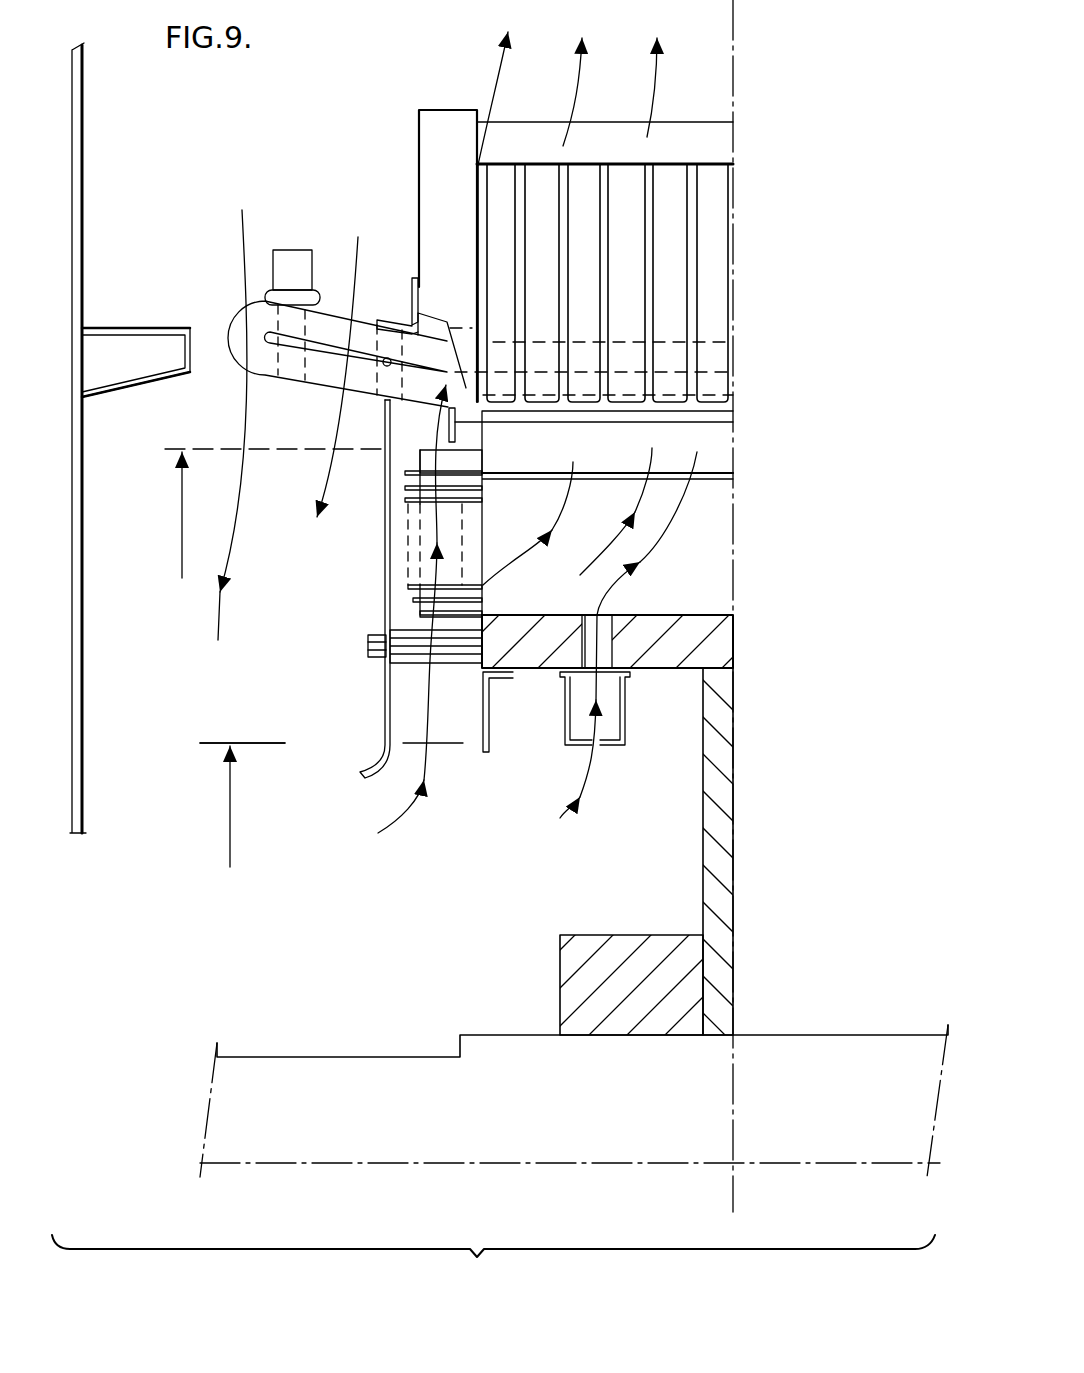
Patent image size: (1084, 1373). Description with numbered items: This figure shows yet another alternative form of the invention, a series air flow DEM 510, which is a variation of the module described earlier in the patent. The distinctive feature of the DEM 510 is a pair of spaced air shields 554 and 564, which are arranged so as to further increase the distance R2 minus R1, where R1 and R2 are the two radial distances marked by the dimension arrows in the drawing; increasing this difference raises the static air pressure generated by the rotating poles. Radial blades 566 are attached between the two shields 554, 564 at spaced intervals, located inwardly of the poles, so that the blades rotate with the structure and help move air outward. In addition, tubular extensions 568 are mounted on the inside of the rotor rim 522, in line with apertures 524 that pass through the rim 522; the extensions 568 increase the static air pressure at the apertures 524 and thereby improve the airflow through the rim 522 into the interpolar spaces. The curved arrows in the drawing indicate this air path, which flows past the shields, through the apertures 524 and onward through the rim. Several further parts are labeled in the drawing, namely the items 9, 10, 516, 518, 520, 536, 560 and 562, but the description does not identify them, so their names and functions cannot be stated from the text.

The air flow path 9 is at (437, 733).
The cooling channel 10 is at (630, 730).
The series air flow DEM 510 is at (640, 876).
The base plate 516 is at (508, 1035).
The support block 518 is at (592, 935).
The side wall 520 is at (703, 800).
The rotor rim 522 is at (521, 672).
The apertures 524 is at (605, 615).
The finned heat sink 536 is at (403, 570).
The air shield 554 is at (388, 502).
The fastener 560 is at (368, 640).
The mounting block 562 is at (395, 668).
The air shield 564 is at (490, 732).
The radial blades 566 is at (457, 733).
The tubular extensions 568 is at (623, 677).
The radial distance R1 is at (242, 825).
The radial distance R2 is at (182, 535).